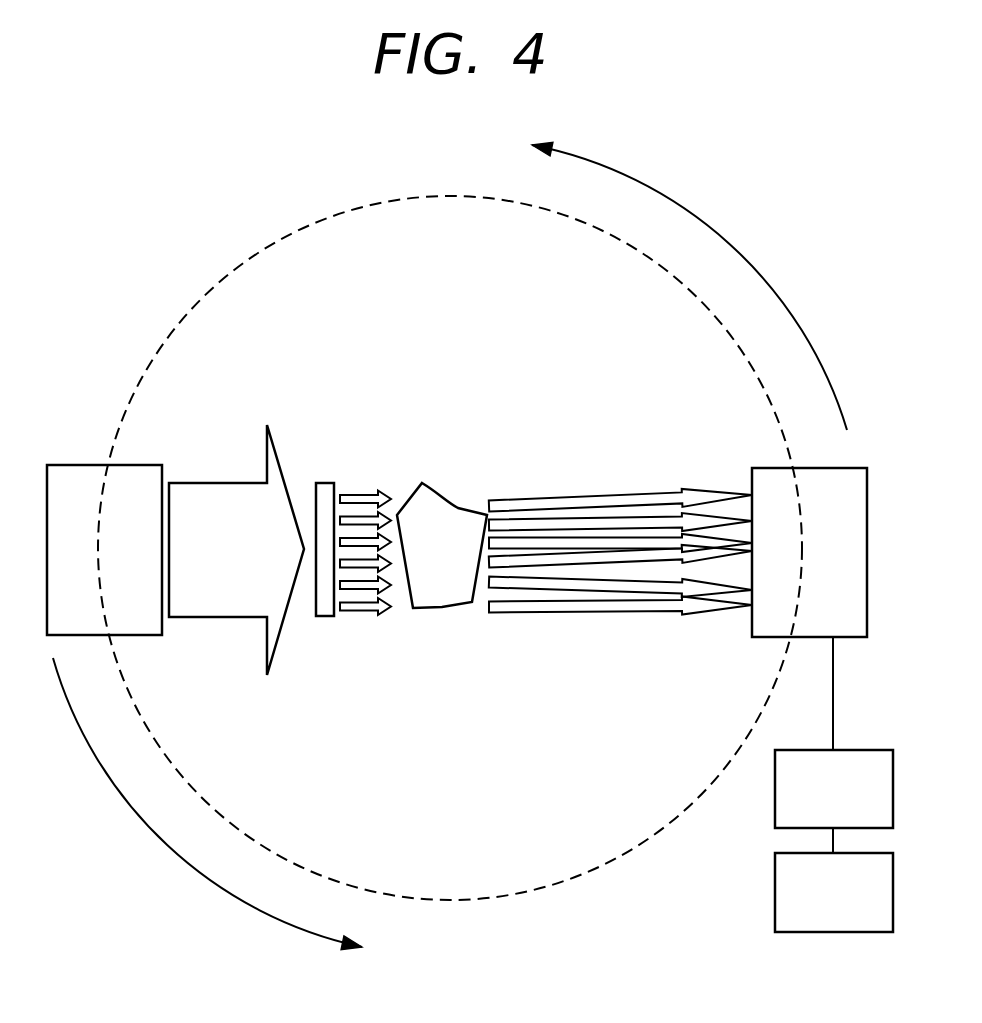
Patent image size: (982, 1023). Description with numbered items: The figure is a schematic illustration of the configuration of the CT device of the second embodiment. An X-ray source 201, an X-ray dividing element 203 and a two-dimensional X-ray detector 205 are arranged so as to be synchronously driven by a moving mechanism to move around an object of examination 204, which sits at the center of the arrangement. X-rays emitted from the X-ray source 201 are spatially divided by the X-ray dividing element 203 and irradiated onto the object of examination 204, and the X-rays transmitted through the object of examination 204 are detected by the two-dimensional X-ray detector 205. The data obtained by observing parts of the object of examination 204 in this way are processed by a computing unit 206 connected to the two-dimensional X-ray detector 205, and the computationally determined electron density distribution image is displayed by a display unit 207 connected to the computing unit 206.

The X-ray source 201 is at (70, 465).
The X-ray dividing element 203 is at (326, 483).
The object of examination 204 is at (425, 609).
The two-dimensional X-ray detector 205 is at (752, 623).
The computing unit 206 is at (775, 810).
The display unit 207 is at (775, 897).